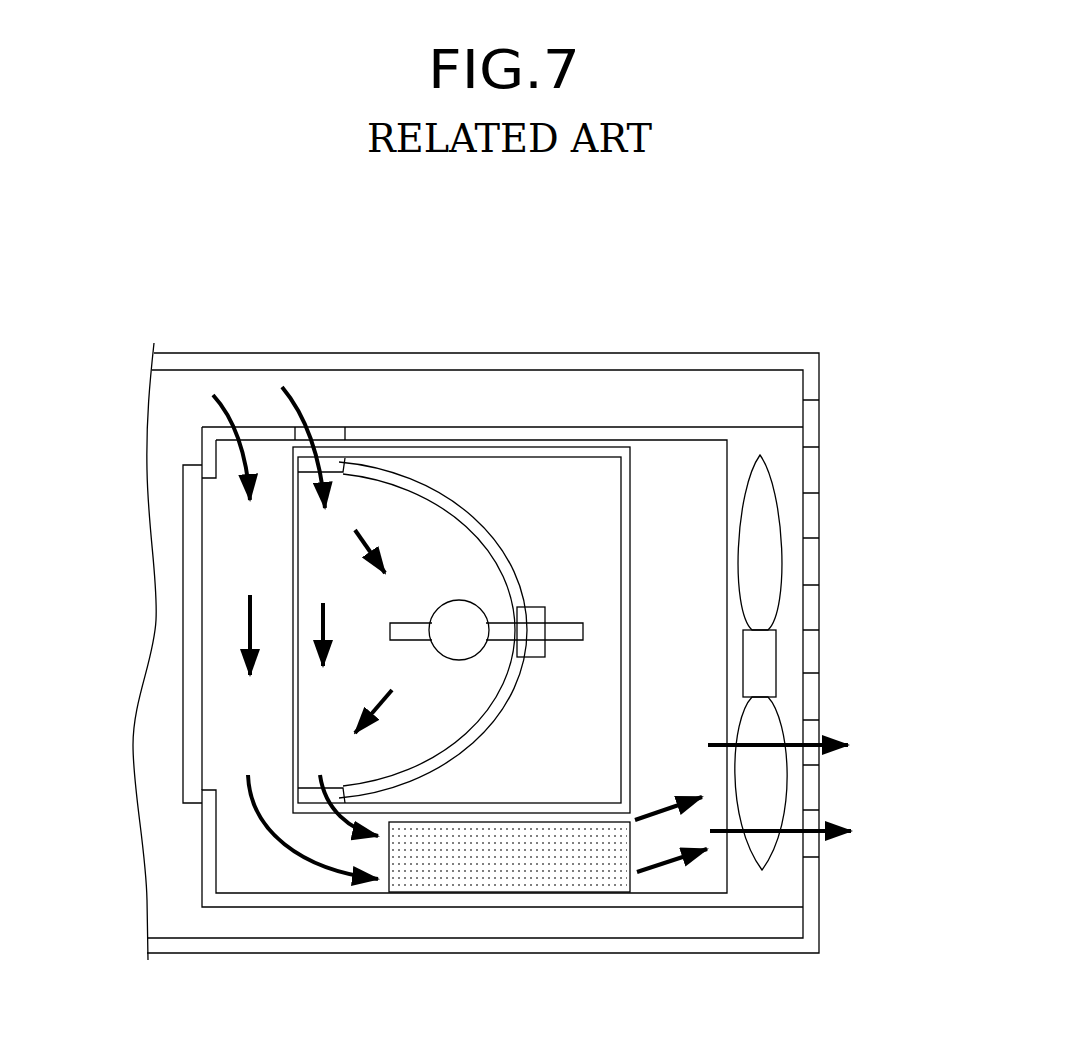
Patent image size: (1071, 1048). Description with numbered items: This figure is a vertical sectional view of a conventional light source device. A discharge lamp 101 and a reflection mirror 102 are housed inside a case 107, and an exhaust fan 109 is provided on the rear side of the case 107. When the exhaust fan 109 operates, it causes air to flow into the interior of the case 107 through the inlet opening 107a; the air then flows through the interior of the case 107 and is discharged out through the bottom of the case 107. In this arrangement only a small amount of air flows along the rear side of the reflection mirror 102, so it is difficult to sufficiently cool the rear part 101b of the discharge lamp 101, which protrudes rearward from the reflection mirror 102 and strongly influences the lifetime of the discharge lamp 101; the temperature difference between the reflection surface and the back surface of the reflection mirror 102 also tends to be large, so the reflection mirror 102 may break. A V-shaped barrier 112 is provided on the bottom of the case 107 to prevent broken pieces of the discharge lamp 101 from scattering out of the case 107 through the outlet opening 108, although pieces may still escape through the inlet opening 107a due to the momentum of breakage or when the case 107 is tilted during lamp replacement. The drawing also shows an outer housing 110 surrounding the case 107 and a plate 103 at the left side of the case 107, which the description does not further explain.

The housing case 110 is at (819, 377).
The case 107 is at (590, 425).
The inlet opening 107a is at (260, 427).
The cover plate 103 is at (183, 550).
The reflection mirror 102 is at (473, 515).
The discharge lamp 101 is at (473, 597).
The rear part of the discharge lamp 101b is at (563, 633).
The exhaust fan 109 is at (767, 550).
The outlet opening 108 is at (785, 655).
The V-shaped barrier 112 is at (485, 858).